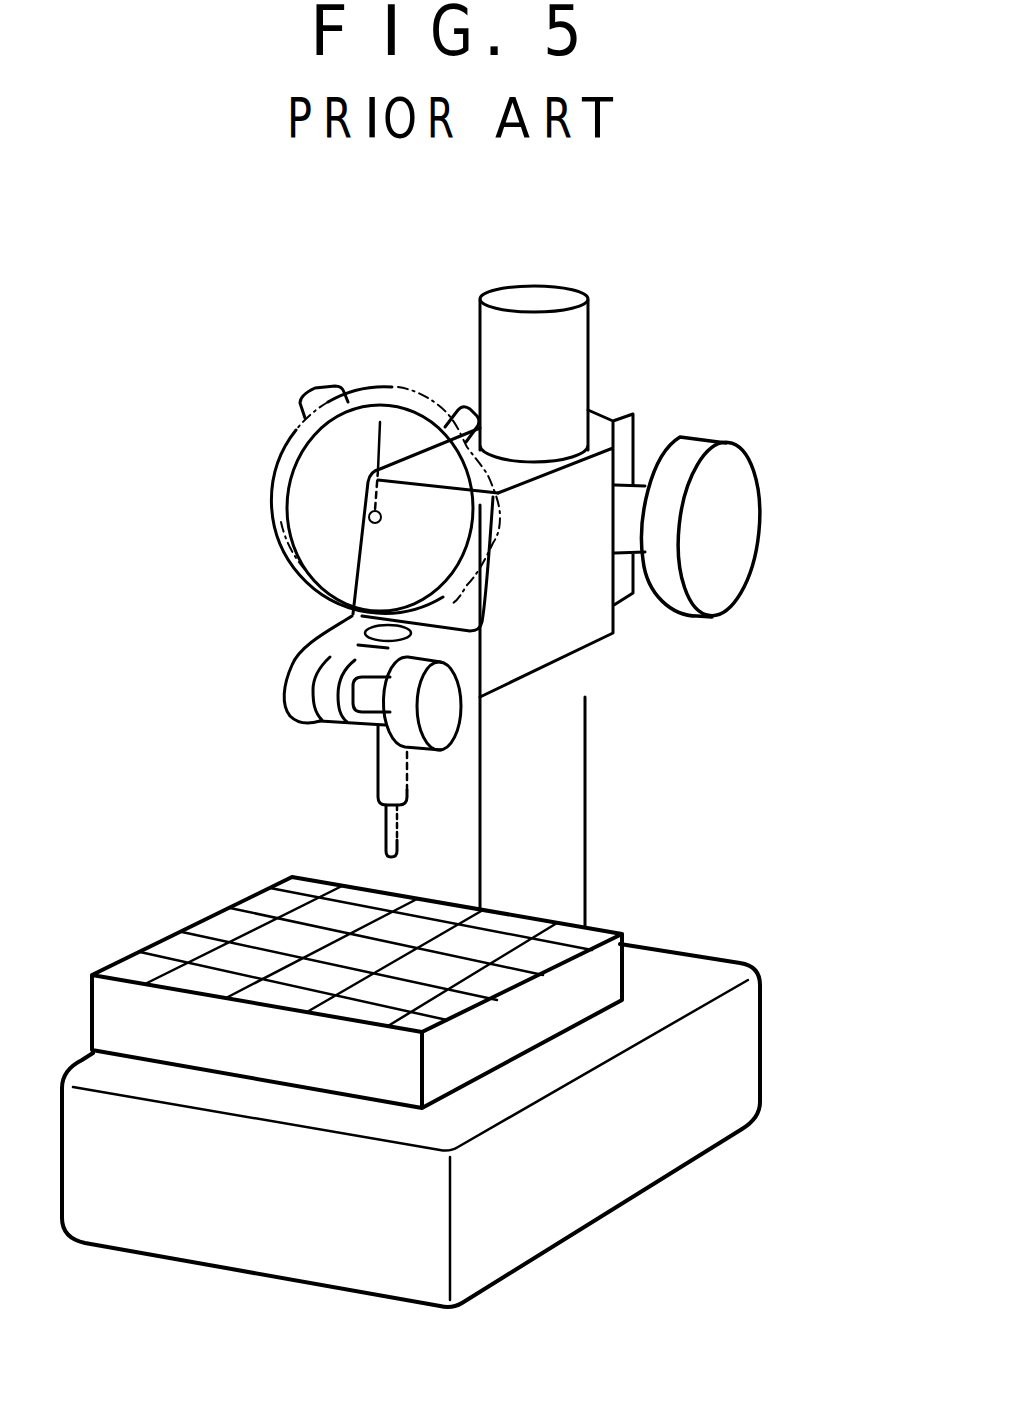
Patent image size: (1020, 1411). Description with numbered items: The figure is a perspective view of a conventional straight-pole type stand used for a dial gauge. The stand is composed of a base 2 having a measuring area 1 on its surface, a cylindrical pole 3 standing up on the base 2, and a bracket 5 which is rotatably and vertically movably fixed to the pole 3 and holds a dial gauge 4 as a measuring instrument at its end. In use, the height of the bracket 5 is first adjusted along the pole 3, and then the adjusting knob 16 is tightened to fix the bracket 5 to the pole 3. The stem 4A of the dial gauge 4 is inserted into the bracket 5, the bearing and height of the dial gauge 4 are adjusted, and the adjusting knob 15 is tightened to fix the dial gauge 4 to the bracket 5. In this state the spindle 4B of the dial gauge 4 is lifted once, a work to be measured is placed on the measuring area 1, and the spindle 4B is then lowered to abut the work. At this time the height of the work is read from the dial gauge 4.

The measuring area 1 is at (167, 937).
The base 2 is at (620, 1207).
The cylindrical pole 3 is at (585, 818).
The dial gauge 4 is at (272, 500).
The stem 4A is at (376, 784).
The spindle 4B is at (383, 840).
The bracket 5 is at (620, 637).
The adjusting knob 15 is at (380, 728).
The adjusting knob 16 is at (759, 517).